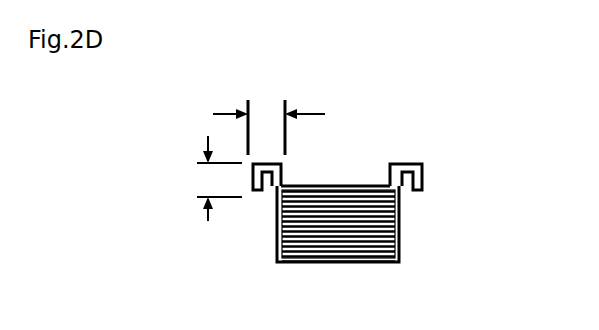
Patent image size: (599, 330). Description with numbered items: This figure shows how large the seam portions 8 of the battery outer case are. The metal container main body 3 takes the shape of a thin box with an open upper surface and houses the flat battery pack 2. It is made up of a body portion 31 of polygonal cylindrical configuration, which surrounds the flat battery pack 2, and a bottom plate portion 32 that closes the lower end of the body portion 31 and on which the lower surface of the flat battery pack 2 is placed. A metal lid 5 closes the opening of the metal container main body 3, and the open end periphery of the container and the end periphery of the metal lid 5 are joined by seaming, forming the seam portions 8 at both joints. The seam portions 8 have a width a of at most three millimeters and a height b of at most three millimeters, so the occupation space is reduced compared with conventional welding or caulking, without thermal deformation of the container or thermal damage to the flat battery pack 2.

The flat battery pack 2 is at (358, 247).
The metal container main body 3 is at (403, 253).
The metal lid 5 is at (355, 186).
The seam portions 8 is at (258, 191).
The body portion 31 is at (402, 210).
The bottom plate portion 32 is at (309, 263).
The width of the seam portions a is at (272, 120).
The height of the seam portions b is at (216, 178).